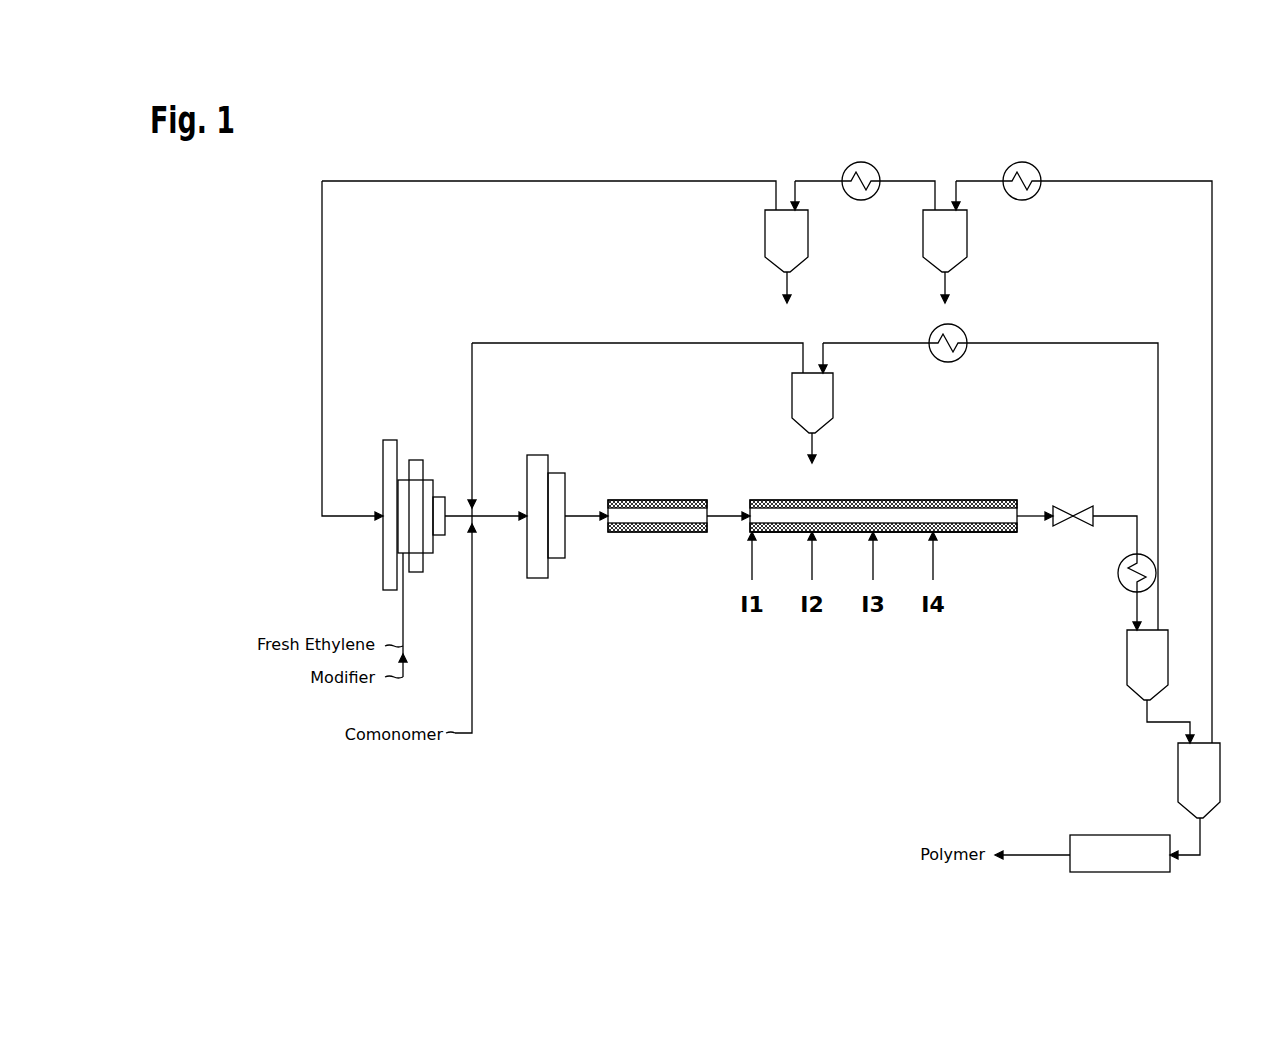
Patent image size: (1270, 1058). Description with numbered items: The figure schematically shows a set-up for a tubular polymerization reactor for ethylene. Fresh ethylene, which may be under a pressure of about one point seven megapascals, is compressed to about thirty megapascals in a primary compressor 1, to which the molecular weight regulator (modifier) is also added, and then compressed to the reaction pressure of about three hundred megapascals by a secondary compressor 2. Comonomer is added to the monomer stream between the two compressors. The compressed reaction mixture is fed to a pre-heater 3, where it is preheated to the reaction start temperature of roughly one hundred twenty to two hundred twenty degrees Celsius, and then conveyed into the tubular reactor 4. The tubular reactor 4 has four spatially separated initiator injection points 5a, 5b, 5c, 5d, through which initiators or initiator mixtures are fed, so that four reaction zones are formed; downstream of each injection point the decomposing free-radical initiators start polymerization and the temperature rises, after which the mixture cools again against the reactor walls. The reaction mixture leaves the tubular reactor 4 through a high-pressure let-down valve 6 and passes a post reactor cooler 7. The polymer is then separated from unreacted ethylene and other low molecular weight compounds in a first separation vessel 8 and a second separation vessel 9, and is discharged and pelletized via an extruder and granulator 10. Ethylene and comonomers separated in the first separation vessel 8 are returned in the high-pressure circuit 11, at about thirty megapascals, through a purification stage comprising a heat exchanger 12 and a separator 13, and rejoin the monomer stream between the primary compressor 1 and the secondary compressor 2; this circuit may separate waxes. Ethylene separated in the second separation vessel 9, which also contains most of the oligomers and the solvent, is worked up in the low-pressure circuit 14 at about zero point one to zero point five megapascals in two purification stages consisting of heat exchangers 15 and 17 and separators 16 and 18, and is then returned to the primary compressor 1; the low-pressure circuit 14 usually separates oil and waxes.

The primary compressor 1 is at (403, 458).
The secondary compressor 2 is at (556, 468).
The pre-heater 3 is at (679, 500).
The tubular reactor 4 is at (992, 500).
The initiator injection point 5a is at (757, 533).
The initiator injection point 5b is at (816, 533).
The initiator injection point 5c is at (877, 533).
The initiator injection point 5d is at (937, 533).
The high-pressure let-down valve 6 is at (1072, 500).
The post reactor cooler 7 is at (1118, 573).
The first separation vessel 8 is at (1137, 657).
The second separation vessel 9 is at (1212, 775).
The extruder and granulator 10 is at (1116, 845).
The high-pressure circuit 11 is at (887, 346).
The heat exchanger 12 is at (948, 363).
The separator 13 is at (800, 402).
The low-pressure circuit 14 is at (978, 178).
The heat exchanger 15 is at (1022, 162).
The separator 16 is at (958, 240).
The heat exchanger 17 is at (863, 162).
The separator 18 is at (800, 240).